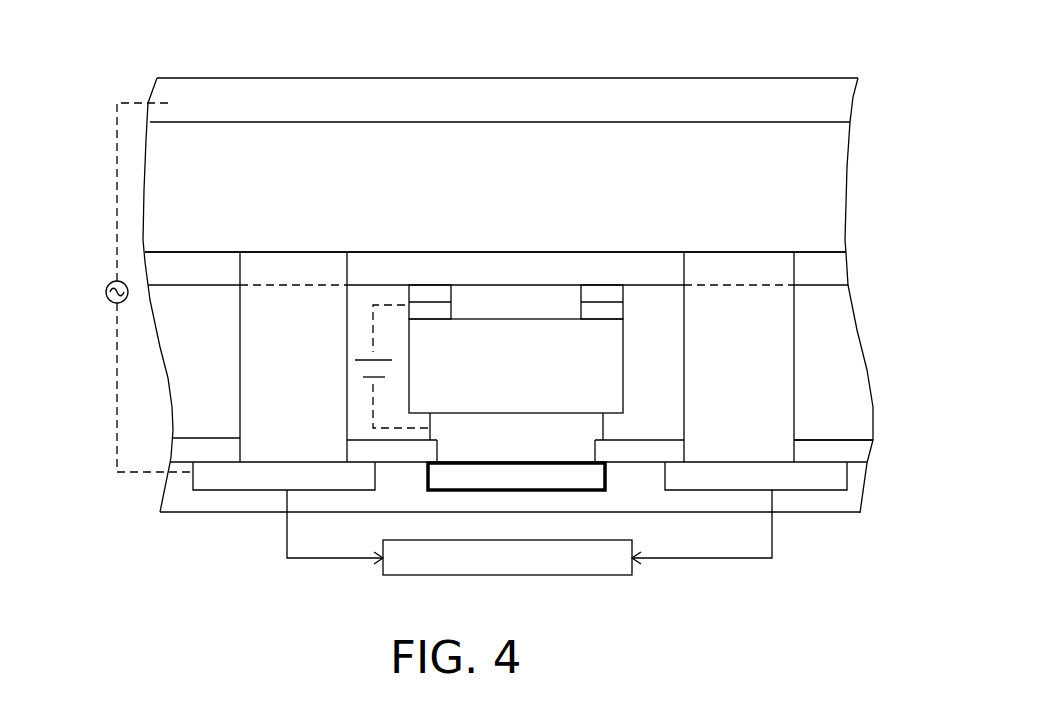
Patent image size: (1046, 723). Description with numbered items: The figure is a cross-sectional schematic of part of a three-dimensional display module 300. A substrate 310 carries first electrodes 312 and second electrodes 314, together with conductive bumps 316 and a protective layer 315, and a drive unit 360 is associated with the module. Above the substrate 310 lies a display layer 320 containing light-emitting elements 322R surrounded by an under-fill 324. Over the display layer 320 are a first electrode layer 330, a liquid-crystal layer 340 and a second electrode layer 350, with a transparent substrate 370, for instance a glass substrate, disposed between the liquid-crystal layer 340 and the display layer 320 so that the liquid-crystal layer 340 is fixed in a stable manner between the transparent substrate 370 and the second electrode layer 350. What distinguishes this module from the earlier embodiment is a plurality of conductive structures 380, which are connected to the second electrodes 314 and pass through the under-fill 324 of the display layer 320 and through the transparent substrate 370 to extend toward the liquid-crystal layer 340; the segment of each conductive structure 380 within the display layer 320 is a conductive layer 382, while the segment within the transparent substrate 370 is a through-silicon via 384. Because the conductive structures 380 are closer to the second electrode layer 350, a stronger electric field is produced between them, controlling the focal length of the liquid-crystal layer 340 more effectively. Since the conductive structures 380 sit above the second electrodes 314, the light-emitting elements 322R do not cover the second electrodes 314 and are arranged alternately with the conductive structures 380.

The three-dimensional display module 300 is at (872, 62).
The substrate 310 is at (174, 493).
The first electrodes 312 is at (472, 468).
The second electrodes 314 is at (203, 478).
The protective layer 315 is at (852, 455).
The conductive bumps 316 is at (570, 442).
The display layer 320 is at (153, 363).
The light-emitting elements 322R is at (420, 333).
The under-fill 324 is at (182, 388).
The first electrode layer 330 is at (405, 290).
The liquid-crystal layer 340 is at (163, 163).
The second electrode layer 350 is at (163, 93).
The drive unit 360 is at (400, 566).
The transparent substrate 370 is at (160, 262).
The conductive structures 380 is at (197, 10).
The conductive layer 382 is at (267, 267).
The through-silicon via 384 is at (295, 293).